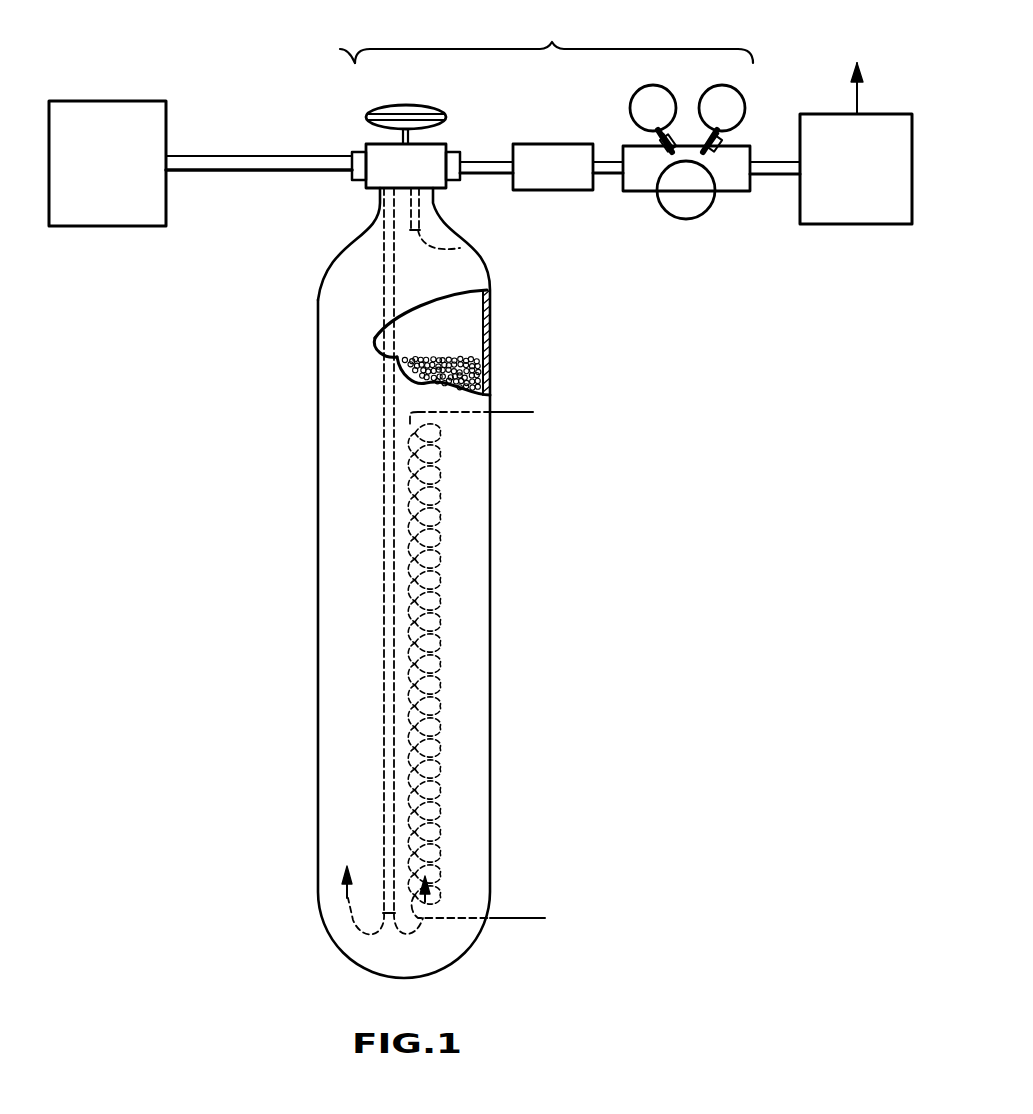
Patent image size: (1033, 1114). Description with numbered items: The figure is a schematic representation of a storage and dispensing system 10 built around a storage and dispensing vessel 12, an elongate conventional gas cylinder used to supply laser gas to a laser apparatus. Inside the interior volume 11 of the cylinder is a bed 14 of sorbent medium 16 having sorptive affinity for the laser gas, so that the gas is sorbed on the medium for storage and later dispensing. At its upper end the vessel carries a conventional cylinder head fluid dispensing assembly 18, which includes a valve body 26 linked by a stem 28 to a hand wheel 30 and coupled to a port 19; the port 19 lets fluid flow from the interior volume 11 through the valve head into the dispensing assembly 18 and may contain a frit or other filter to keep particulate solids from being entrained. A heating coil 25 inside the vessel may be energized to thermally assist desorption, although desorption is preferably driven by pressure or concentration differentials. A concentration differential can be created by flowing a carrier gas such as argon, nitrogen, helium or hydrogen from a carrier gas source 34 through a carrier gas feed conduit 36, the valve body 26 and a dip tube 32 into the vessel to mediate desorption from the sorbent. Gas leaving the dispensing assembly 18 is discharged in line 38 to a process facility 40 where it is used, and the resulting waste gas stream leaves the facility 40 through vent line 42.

The storage and dispensing system 10 is at (316, 66).
The interior volume 11 is at (467, 302).
The storage and dispensing vessel 12 is at (318, 560).
The bed 14 is at (472, 331).
The sorbent medium 16 is at (482, 368).
The cylinder head fluid dispensing assembly 18 is at (554, 115).
The port 19 is at (455, 249).
The heating coil 25 is at (512, 413).
The valve body 26 is at (437, 148).
The stem 28 is at (402, 140).
The hand wheel 30 is at (416, 108).
The dip tube 32 is at (388, 346).
The carrier gas source 34 is at (120, 103).
The carrier gas feed conduit 36 is at (213, 172).
The line 38 is at (784, 176).
The process facility 40 is at (847, 226).
The vent line 42 is at (862, 106).